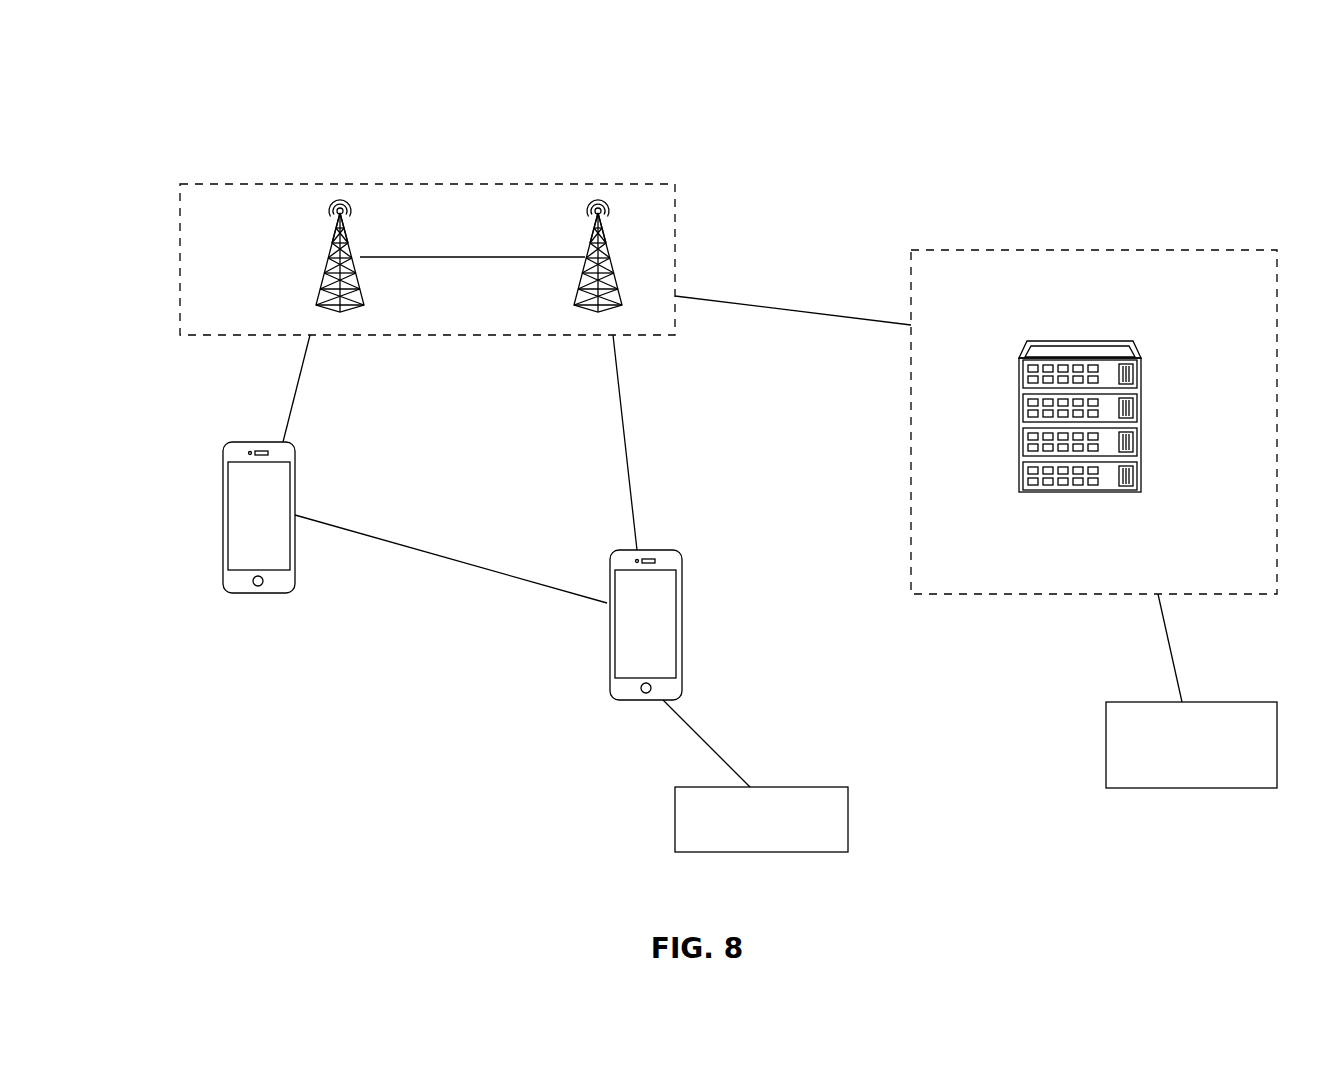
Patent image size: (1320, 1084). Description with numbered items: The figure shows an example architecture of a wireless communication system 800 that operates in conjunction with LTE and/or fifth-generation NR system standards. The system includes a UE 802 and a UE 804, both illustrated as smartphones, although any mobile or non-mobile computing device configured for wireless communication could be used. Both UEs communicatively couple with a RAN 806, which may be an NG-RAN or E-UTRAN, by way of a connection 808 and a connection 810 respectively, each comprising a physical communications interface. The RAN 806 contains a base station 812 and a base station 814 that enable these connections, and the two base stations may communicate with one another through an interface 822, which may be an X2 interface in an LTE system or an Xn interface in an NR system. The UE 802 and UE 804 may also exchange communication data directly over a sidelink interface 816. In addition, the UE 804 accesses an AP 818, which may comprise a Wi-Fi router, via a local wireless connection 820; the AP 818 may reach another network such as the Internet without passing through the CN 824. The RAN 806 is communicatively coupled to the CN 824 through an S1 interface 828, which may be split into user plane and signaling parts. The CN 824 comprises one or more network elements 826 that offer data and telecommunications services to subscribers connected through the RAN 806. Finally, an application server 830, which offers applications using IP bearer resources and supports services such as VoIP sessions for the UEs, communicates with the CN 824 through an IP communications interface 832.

The wireless communication system 800 is at (1195, 102).
The UE 802 is at (225, 478).
The UE 804 is at (695, 585).
The RAN 806 is at (428, 184).
The connection 808 is at (302, 378).
The connection 810 is at (622, 425).
The base station 812 is at (330, 222).
The base station 814 is at (590, 222).
The sidelink interface 816 is at (440, 553).
The AP 818 is at (676, 835).
The connection 820 is at (692, 733).
The interface 822 is at (420, 260).
The CN 824 is at (1094, 250).
The network elements 826 is at (1143, 375).
The S1 interface 828 is at (760, 306).
The application server 830 is at (1105, 718).
The IP communications interface 832 is at (1174, 662).